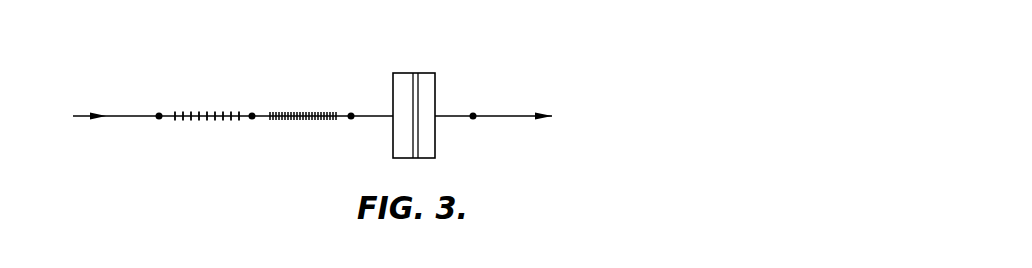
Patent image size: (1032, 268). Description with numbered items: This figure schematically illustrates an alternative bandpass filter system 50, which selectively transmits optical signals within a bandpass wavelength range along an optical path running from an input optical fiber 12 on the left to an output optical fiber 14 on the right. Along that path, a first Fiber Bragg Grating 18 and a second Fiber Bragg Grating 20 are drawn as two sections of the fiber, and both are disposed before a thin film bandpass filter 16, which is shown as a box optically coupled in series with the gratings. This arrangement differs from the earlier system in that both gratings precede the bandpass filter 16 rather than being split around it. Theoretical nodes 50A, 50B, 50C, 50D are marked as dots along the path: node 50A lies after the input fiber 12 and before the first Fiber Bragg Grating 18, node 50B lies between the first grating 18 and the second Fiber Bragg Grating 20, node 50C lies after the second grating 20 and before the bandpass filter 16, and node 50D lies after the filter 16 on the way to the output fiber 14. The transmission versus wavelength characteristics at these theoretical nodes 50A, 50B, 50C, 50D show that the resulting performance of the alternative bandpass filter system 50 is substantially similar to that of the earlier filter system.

The input optical fiber 12 is at (82, 116).
The output optical fiber 14 is at (545, 114).
The thin film bandpass filter 16 is at (416, 73).
The first Fiber Bragg Grating 18 is at (200, 116).
The second Fiber Bragg Grating 20 is at (318, 122).
The alternative bandpass filter system 50 is at (616, 33).
The theoretical node 50A is at (159, 118).
The theoretical node 50B is at (252, 118).
The theoretical node 50C is at (351, 116).
The theoretical node 50D is at (473, 114).